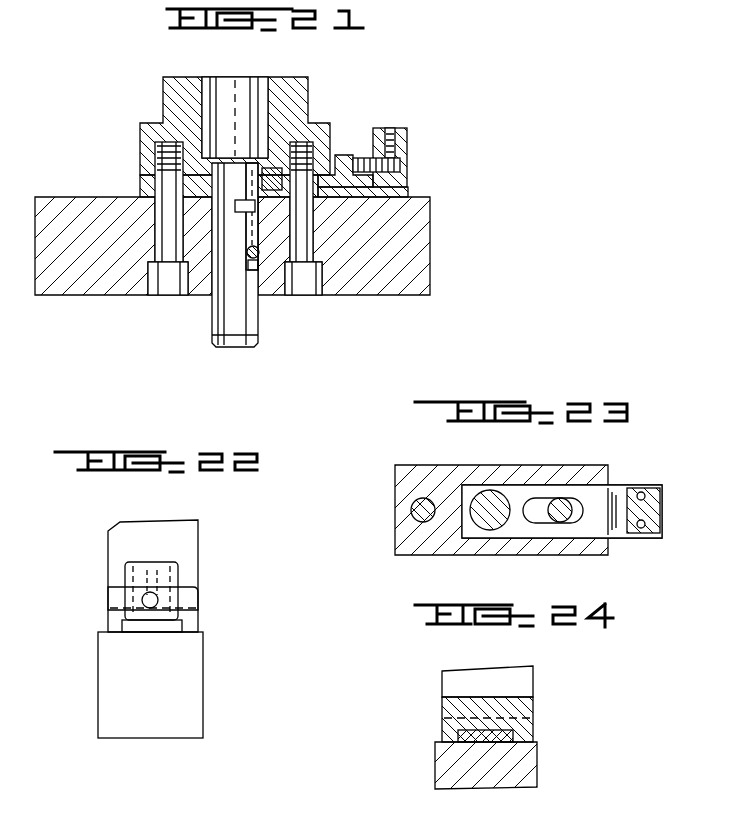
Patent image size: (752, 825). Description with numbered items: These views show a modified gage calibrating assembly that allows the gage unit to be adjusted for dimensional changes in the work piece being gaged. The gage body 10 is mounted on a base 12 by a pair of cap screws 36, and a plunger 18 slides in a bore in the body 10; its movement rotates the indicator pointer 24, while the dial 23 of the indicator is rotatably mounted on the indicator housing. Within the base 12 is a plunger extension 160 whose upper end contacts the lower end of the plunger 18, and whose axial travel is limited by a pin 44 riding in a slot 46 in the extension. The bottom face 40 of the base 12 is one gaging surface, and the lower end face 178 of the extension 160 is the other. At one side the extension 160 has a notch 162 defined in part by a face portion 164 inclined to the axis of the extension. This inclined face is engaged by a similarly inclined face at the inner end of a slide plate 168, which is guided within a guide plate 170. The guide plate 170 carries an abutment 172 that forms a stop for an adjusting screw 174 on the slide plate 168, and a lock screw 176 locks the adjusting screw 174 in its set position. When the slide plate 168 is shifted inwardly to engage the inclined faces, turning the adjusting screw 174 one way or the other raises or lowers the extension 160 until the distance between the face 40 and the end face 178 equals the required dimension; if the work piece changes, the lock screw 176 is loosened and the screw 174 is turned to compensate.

In FIG. 21, the gage body 10 is at (300, 106).
In FIG. 22, the gage body 10 is at (192, 561).
In FIG. 24, the gage body 10 is at (525, 686).
In FIG. 21, the base 12 is at (425, 279).
In FIG. 22, the base 12 is at (190, 712).
In FIG. 24, the base 12 is at (530, 772).
In FIG. 21, the plunger 18 is at (250, 129).
In FIG. 21, the dial 23 is at (90, 182).
In FIG. 21, the indicator pointer 24 is at (343, 138).
In FIG. 23, the cap screws 36 is at (426, 500).
In FIG. 21, the bottom face 40 is at (380, 297).
In FIG. 21, the pin 44 is at (257, 256).
In FIG. 21, the slot 46 is at (258, 268).
In FIG. 21, the plunger extension 160 is at (258, 336).
In FIG. 23, the plunger extension 160 is at (490, 525).
In FIG. 21, the notch 162 is at (237, 216).
In FIG. 21, the face portion 164 is at (240, 205).
In FIG. 21, the slide plate 168 is at (410, 184).
In FIG. 22, the slide plate 168 is at (153, 628).
In FIG. 23, the slide plate 168 is at (616, 496).
In FIG. 24, the slide plate 168 is at (490, 735).
In FIG. 21, the guide plate 170 is at (135, 196).
In FIG. 23, the guide plate 170 is at (600, 470).
In FIG. 24, the guide plate 170 is at (525, 737).
In FIG. 21, the abutment 172 is at (342, 165).
In FIG. 24, the abutment 172 is at (515, 702).
In FIG. 21, the adjusting screw 174 is at (405, 172).
In FIG. 22, the adjusting screw 174 is at (160, 600).
In FIG. 21, the lock screw 176 is at (390, 142).
In FIG. 22, the lock screw 176 is at (150, 588).
In FIG. 21, the lower end face 178 is at (237, 345).